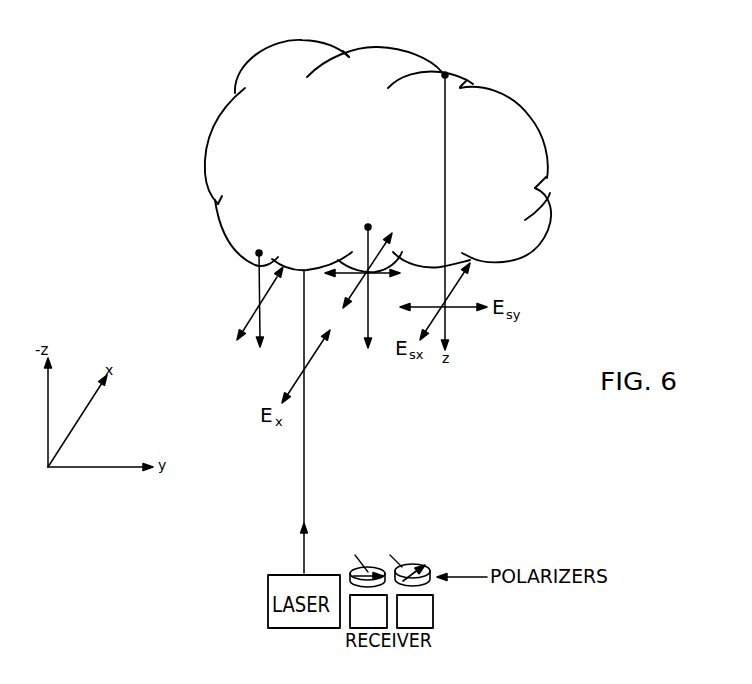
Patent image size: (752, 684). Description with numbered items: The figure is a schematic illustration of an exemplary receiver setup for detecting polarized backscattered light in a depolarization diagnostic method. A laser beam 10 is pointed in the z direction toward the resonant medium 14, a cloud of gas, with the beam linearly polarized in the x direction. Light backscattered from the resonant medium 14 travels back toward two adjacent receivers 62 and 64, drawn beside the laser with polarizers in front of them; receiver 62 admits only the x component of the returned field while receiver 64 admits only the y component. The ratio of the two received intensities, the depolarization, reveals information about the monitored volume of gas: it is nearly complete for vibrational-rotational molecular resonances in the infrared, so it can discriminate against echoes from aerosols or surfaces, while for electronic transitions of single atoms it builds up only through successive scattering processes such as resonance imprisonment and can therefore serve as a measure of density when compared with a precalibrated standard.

The resonant medium 14 is at (395, 52).
The laser beam 10 is at (303, 513).
The receiver 64 is at (352, 572).
The receiver 62 is at (430, 580).